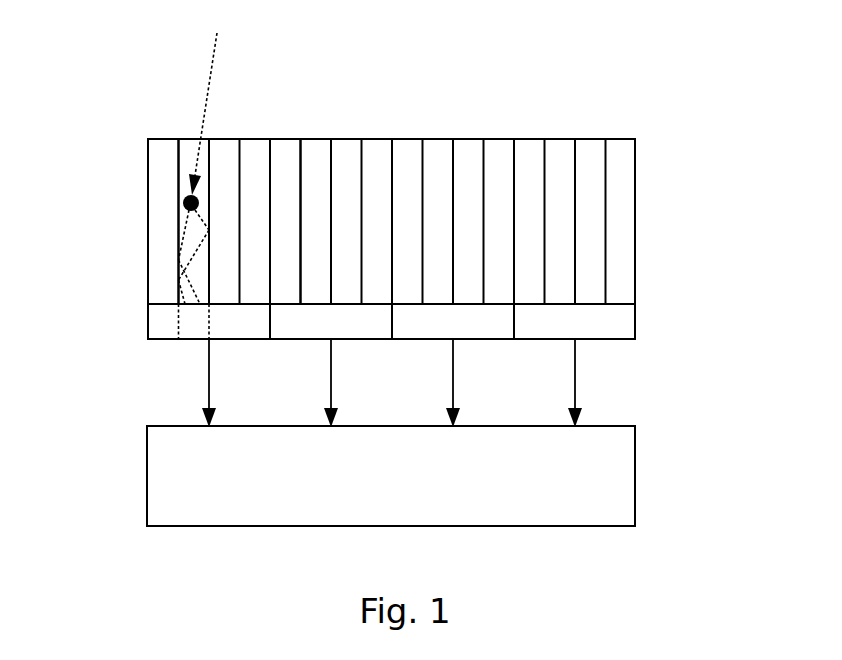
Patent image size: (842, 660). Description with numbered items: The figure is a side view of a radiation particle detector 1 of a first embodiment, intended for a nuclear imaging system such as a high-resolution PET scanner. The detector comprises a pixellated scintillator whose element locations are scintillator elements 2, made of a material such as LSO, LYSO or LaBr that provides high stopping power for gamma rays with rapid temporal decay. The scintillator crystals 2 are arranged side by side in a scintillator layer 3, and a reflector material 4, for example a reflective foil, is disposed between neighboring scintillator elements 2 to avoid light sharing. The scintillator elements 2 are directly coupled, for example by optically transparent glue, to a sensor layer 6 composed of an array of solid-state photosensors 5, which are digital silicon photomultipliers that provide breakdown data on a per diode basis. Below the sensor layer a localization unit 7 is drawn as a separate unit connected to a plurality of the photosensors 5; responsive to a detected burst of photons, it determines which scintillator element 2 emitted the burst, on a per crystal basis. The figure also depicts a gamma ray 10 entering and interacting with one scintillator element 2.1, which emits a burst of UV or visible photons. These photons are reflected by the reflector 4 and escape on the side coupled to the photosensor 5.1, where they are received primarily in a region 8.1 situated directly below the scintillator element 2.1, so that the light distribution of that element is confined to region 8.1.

The radiation particle detector 1 is at (669, 78).
The scintillator elements 2 is at (377, 150).
The scintillator element 2.1 is at (185, 150).
The scintillator layer 3 is at (662, 217).
The reflector material 4 is at (175, 173).
The solid-state photosensors 5 is at (238, 333).
The photosensor 5.1 is at (163, 317).
The sensor layer 6 is at (662, 317).
The localization unit 7 is at (622, 473).
The region 8.1 is at (188, 335).
The gamma ray 10 is at (208, 80).